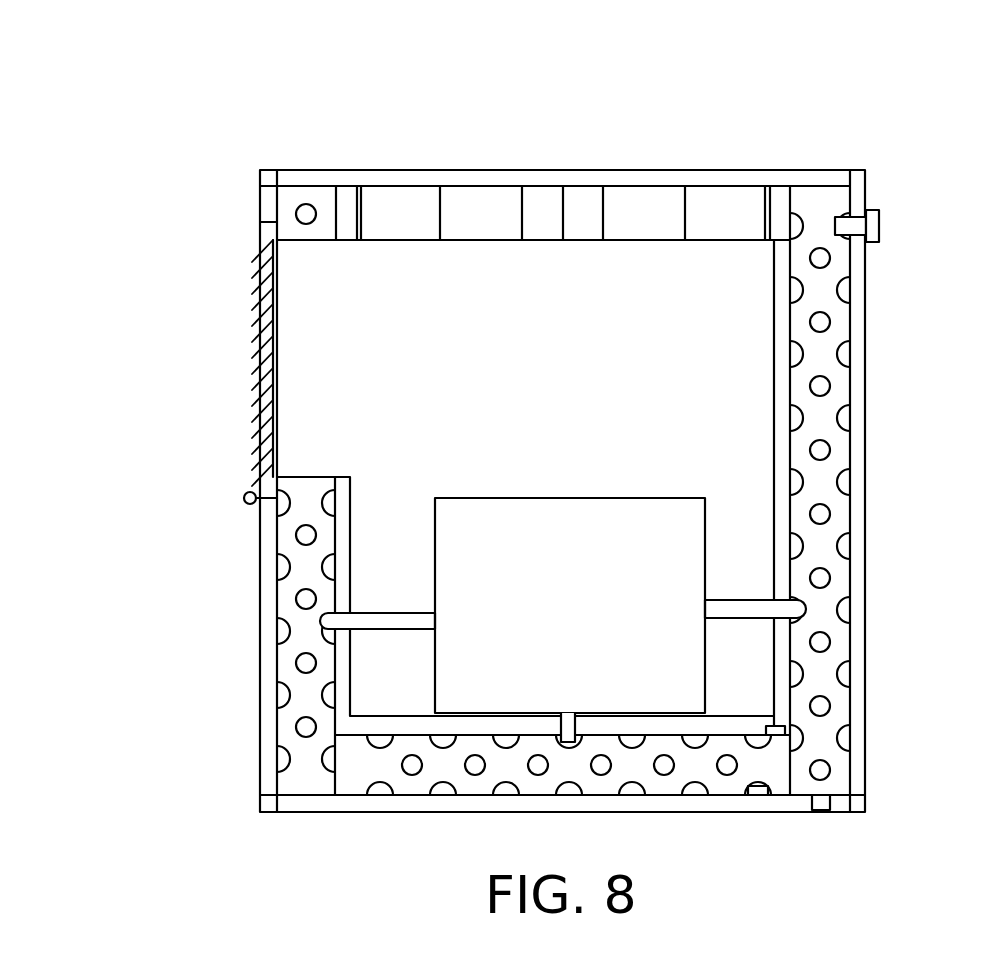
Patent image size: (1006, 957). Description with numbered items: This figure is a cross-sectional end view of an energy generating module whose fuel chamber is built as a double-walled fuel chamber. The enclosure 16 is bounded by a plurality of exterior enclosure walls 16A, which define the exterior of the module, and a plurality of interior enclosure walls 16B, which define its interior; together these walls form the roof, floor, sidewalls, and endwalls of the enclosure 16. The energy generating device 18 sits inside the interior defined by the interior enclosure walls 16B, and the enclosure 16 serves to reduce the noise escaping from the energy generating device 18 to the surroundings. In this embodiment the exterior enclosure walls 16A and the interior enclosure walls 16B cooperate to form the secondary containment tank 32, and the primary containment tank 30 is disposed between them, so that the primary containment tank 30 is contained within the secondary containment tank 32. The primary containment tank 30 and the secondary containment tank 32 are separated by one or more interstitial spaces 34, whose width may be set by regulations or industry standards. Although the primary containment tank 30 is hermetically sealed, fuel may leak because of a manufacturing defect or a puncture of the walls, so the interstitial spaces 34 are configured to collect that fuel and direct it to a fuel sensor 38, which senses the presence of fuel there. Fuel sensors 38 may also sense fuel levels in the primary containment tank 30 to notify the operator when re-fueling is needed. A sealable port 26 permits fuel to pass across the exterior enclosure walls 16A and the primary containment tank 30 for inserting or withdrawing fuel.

The enclosure 16 is at (226, 128).
The exterior enclosure walls 16A is at (260, 740).
The interior enclosure walls 16B is at (773, 268).
The energy generating device 18 is at (530, 498).
The sealable port 26 is at (880, 223).
The primary containment tank 30 is at (778, 452).
The secondary containment tank 32 is at (765, 362).
The interstitial space 34 is at (857, 570).
The fuel sensor 38 is at (757, 796).